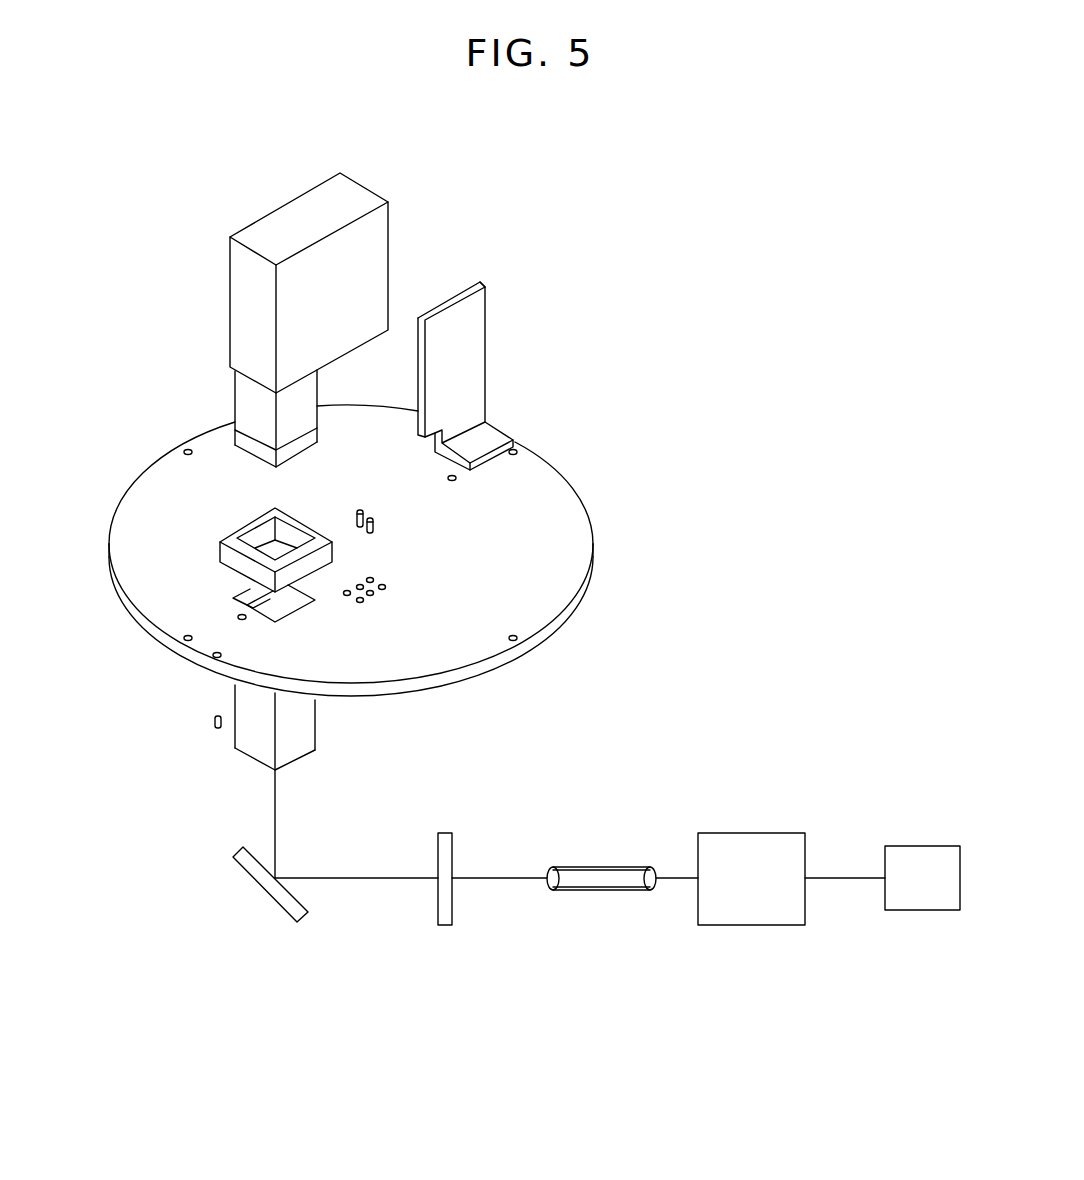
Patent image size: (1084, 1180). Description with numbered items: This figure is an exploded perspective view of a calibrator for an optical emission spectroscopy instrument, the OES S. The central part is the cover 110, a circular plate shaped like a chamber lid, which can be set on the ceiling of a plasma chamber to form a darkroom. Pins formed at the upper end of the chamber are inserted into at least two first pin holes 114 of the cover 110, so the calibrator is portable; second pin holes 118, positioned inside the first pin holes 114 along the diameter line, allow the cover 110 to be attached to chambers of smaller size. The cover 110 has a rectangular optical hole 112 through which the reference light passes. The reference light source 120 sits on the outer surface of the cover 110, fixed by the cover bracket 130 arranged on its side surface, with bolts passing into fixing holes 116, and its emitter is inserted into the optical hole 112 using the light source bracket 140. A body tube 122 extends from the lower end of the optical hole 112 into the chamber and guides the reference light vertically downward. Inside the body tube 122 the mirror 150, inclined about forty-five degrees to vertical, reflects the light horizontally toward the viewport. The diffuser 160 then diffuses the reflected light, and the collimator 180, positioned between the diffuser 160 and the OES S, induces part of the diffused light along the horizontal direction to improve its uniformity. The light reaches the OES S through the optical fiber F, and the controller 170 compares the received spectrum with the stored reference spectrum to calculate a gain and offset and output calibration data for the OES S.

The cover 110 is at (133, 520).
The optical hole 112 is at (265, 600).
The first pin holes 114 is at (516, 449).
The fixing holes 116 is at (386, 587).
The second pin holes 118 is at (456, 480).
The reference light source 120 is at (230, 302).
The body tube 122 is at (237, 748).
The cover bracket 130 is at (482, 333).
The light source bracket 140 is at (248, 527).
The mirror 150 is at (264, 891).
The diffuser 160 is at (445, 925).
The controller 170 is at (922, 910).
The collimator 180 is at (600, 890).
The optical fiber F is at (502, 879).
The OES S is at (750, 925).